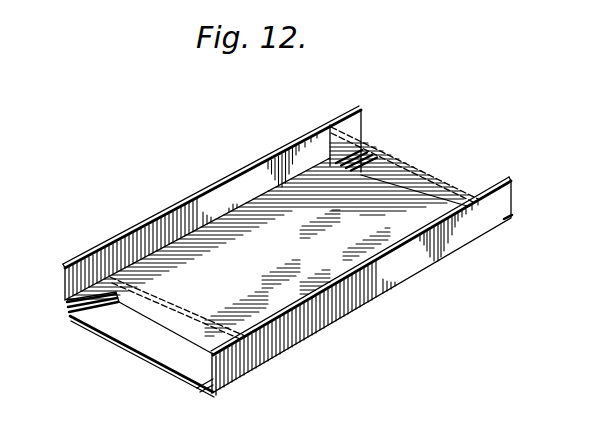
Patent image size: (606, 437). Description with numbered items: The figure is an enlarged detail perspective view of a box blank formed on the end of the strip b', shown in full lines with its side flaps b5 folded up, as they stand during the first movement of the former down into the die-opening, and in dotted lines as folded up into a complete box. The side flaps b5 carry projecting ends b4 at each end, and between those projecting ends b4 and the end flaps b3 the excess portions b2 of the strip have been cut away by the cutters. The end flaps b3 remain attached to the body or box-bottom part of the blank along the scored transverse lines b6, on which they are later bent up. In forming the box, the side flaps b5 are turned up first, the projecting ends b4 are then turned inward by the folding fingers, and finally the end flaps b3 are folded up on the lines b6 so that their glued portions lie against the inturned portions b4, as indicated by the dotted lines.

The strip b' is at (272, 233).
The excess portions b2 is at (68, 303).
The end flaps b3 is at (432, 153).
The projecting ends b4 is at (355, 122).
The side flaps b5 is at (287, 250).
The transverse lines b6 is at (135, 318).